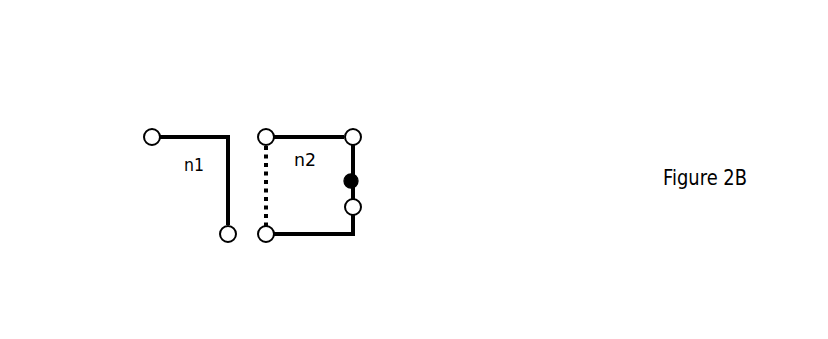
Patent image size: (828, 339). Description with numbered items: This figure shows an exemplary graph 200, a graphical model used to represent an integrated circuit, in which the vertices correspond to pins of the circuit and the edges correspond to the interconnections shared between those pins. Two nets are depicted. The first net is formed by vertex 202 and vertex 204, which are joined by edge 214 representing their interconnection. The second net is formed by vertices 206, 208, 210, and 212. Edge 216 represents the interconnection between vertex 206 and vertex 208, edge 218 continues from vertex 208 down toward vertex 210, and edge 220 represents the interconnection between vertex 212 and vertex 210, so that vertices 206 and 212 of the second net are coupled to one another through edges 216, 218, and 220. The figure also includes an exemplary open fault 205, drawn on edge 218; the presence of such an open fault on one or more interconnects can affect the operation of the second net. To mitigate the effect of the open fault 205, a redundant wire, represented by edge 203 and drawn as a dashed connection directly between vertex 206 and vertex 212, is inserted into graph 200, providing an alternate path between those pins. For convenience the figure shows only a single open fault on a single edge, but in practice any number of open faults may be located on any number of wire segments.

The graph 200 is at (80, 47).
The vertex 202 is at (153, 128).
The edge 203 is at (268, 193).
The vertex 204 is at (222, 241).
The open fault 205 is at (357, 184).
The vertex 206 is at (265, 128).
The vertex 208 is at (356, 129).
The vertex 210 is at (359, 213).
The vertex 212 is at (263, 242).
The edge 214 is at (226, 194).
The edge 216 is at (313, 134).
The edge 218 is at (357, 167).
The edge 220 is at (318, 237).